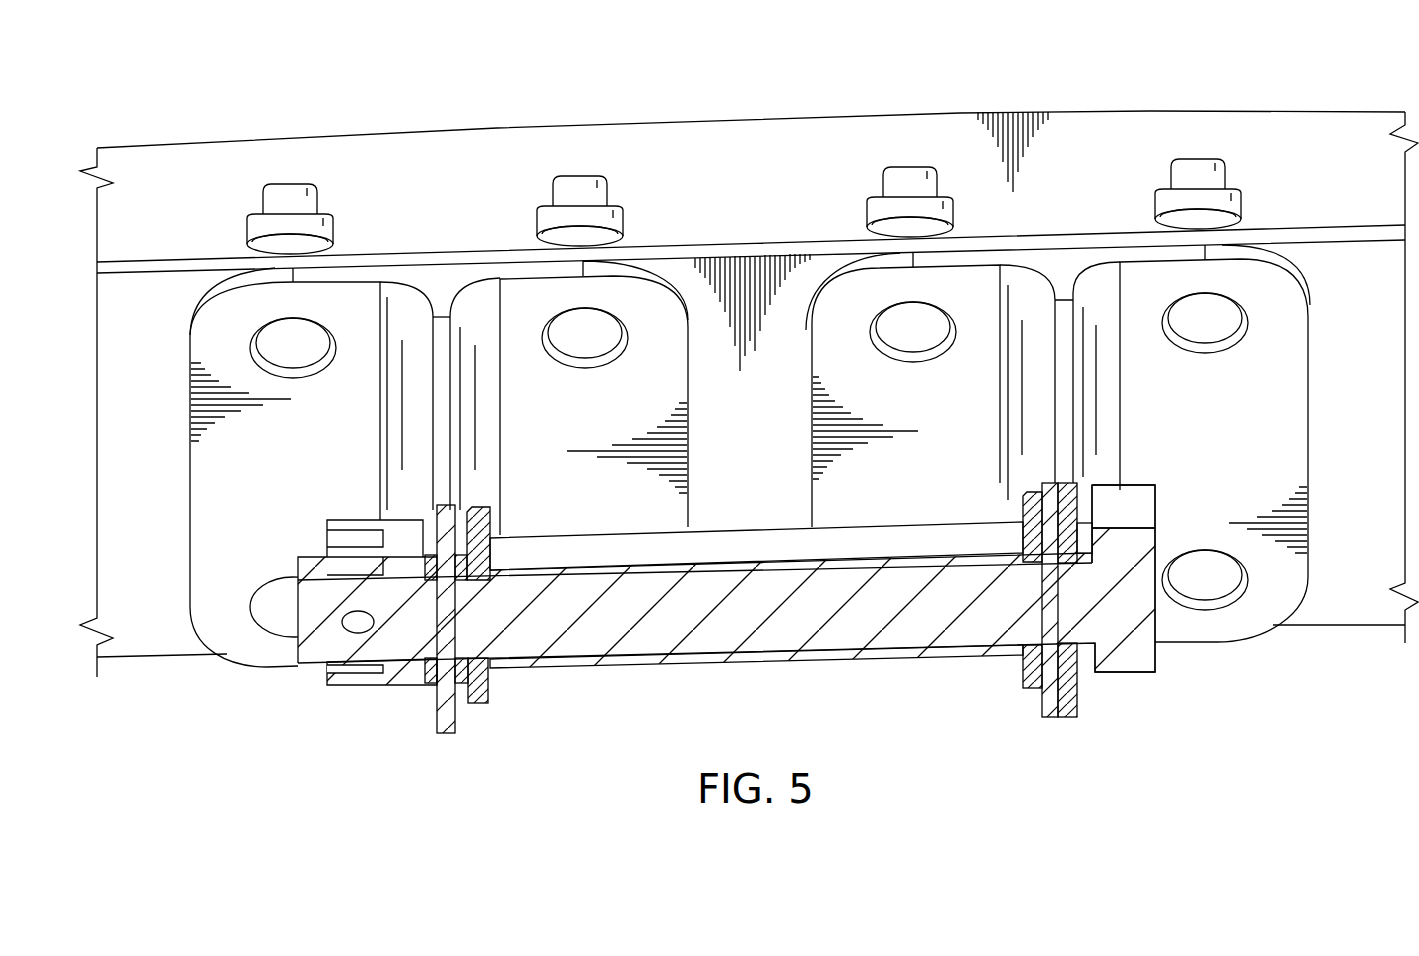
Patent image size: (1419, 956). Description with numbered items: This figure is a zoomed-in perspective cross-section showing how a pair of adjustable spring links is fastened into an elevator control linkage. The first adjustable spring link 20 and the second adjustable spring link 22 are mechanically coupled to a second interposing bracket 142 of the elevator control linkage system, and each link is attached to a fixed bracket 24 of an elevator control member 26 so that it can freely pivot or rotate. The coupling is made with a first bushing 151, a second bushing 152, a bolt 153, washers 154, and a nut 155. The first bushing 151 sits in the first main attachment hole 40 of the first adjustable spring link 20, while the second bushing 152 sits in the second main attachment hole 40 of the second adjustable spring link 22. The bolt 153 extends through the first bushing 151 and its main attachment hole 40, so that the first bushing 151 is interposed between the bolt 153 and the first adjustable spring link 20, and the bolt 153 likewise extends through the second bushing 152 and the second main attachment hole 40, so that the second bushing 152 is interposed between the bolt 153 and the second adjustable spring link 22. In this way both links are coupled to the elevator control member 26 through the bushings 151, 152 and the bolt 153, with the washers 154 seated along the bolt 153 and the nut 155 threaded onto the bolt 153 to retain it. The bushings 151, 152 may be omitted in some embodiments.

The elevator control member 26 is at (727, 130).
The fixed bracket 24 is at (210, 478).
The second interposing bracket 142 is at (1287, 403).
The first bushing 151 is at (490, 573).
The second bushing 152 is at (1002, 541).
The bolt 153 is at (1125, 663).
The washers 154 is at (428, 680).
The nut 155 is at (367, 678).
The first adjustable spring link 20 is at (480, 693).
The main attachment hole 40 is at (480, 662).
The second adjustable spring link 22 is at (1032, 682).